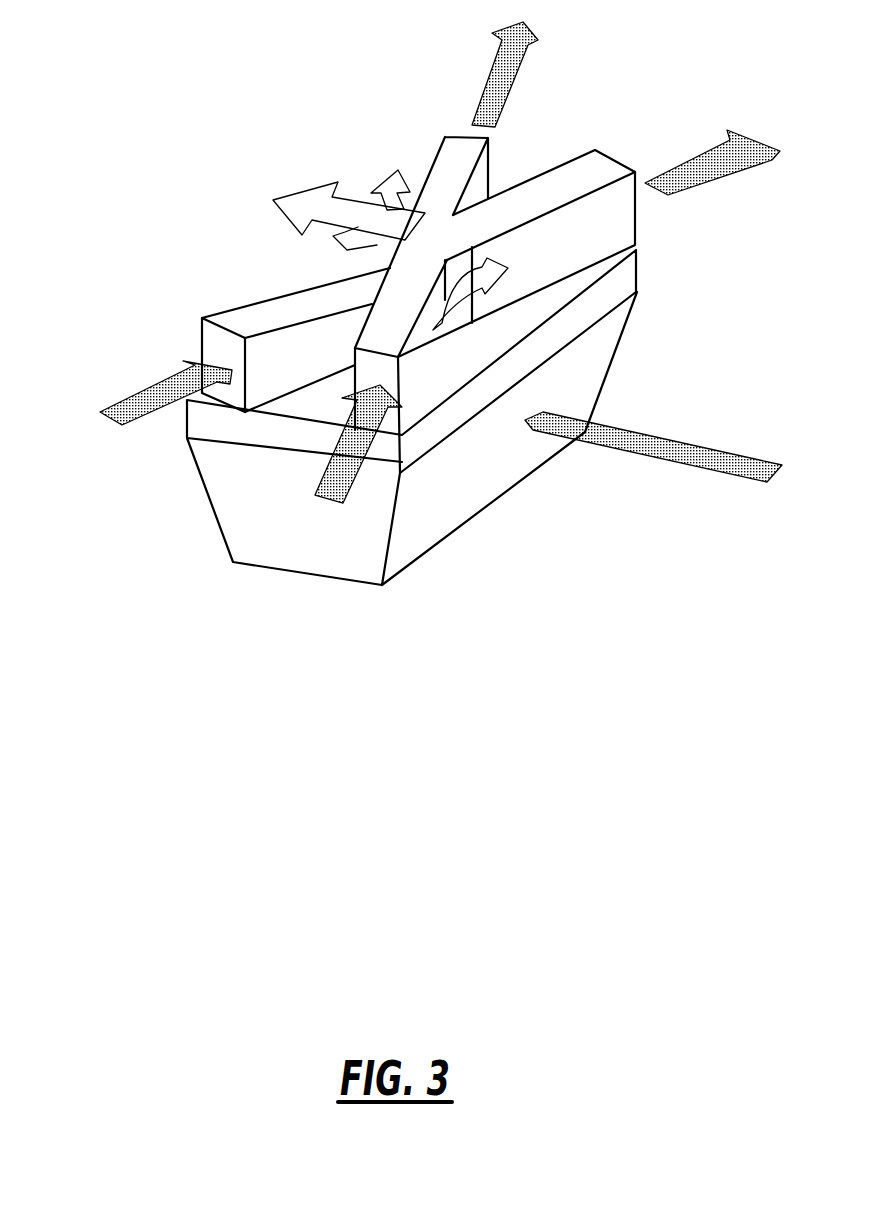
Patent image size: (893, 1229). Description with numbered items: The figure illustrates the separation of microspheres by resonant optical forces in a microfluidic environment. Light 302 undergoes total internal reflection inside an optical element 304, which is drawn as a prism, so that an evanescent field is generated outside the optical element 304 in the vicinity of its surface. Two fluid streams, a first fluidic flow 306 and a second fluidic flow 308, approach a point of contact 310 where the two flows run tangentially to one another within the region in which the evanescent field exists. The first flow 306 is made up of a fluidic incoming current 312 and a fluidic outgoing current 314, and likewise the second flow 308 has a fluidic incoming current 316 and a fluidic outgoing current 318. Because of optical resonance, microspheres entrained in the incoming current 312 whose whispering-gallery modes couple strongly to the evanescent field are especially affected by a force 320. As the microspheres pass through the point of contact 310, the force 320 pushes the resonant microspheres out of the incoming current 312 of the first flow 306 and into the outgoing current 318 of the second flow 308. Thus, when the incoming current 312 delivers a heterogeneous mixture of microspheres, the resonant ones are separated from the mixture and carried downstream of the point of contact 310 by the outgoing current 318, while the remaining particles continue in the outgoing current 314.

The light 302 is at (625, 440).
The optical element 304 is at (355, 557).
The first fluidic flow 306 is at (488, 262).
The second fluidic flow 308 is at (395, 172).
The point of contact 310 is at (432, 208).
The fluidic incoming current 312 is at (343, 475).
The fluidic outgoing current 314 is at (723, 152).
The fluidic incoming current 316 is at (125, 397).
The fluidic outgoing current 318 is at (490, 90).
The force 320 is at (297, 210).